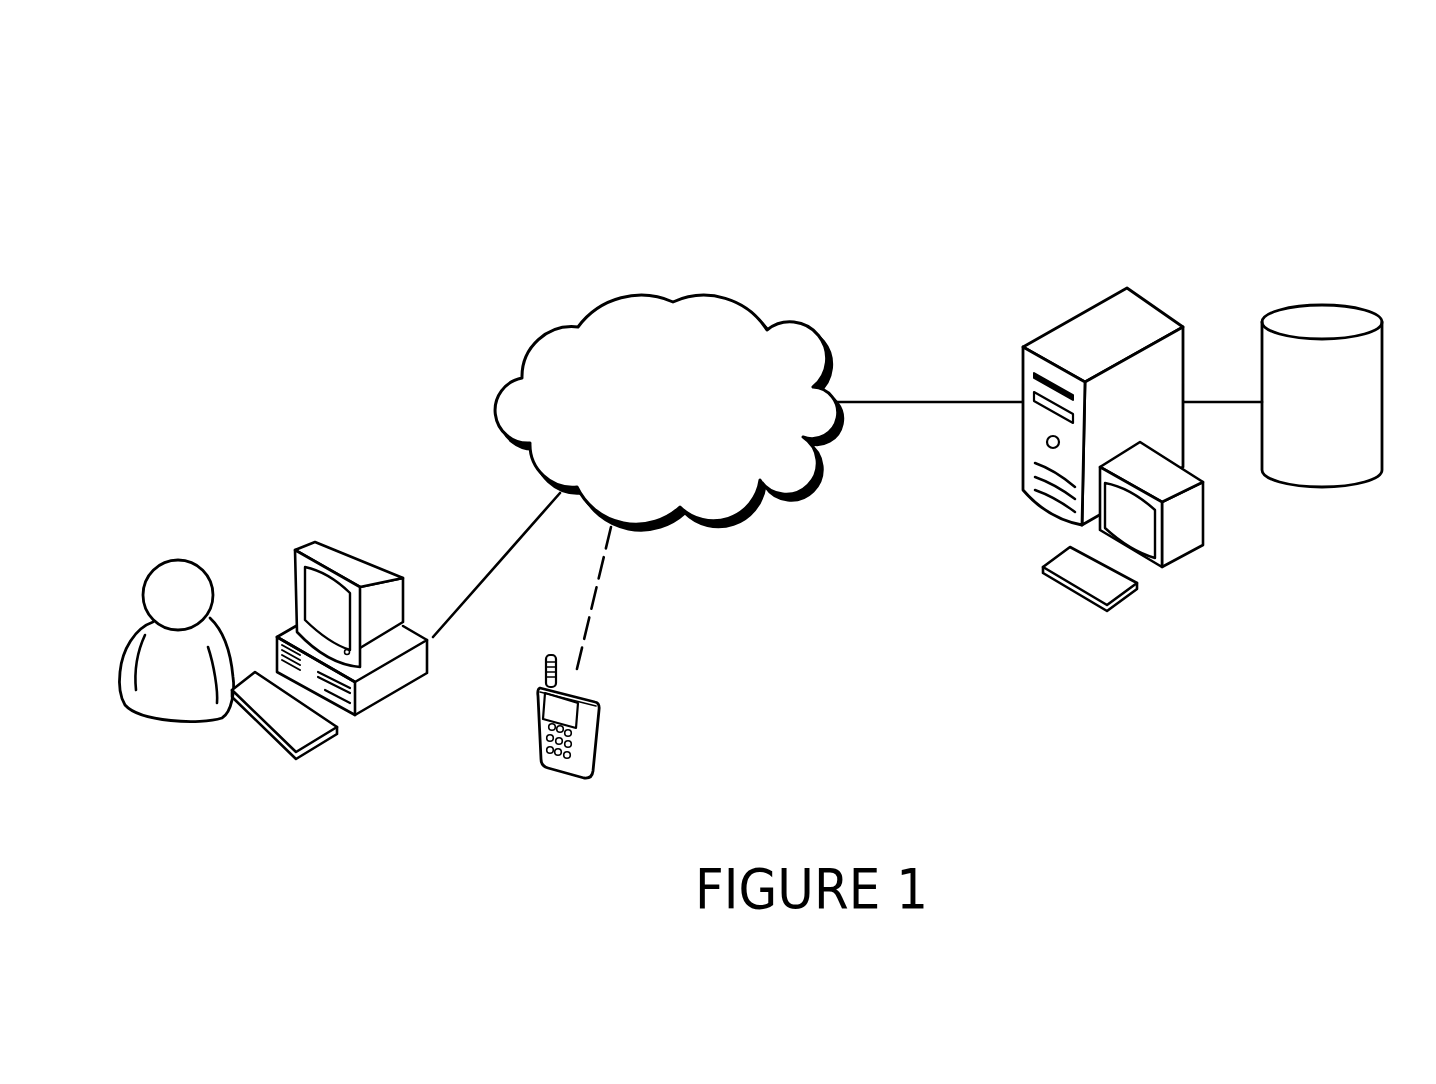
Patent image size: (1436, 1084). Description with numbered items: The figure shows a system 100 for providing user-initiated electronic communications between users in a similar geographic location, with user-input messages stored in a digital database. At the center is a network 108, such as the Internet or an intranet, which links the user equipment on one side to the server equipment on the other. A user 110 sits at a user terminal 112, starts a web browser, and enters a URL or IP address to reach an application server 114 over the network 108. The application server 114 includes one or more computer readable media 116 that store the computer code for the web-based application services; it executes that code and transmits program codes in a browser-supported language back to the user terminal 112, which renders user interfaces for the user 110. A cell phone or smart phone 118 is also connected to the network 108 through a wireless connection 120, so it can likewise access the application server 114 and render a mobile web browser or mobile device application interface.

The system 100 is at (998, 115).
The network 108 is at (669, 412).
The user 110 is at (178, 558).
The user terminal 112 is at (318, 543).
The application server 114 is at (1127, 288).
The computer readable media 116 is at (1322, 303).
The cell phone or smart phone 118 is at (593, 697).
The wireless connection 120 is at (590, 610).